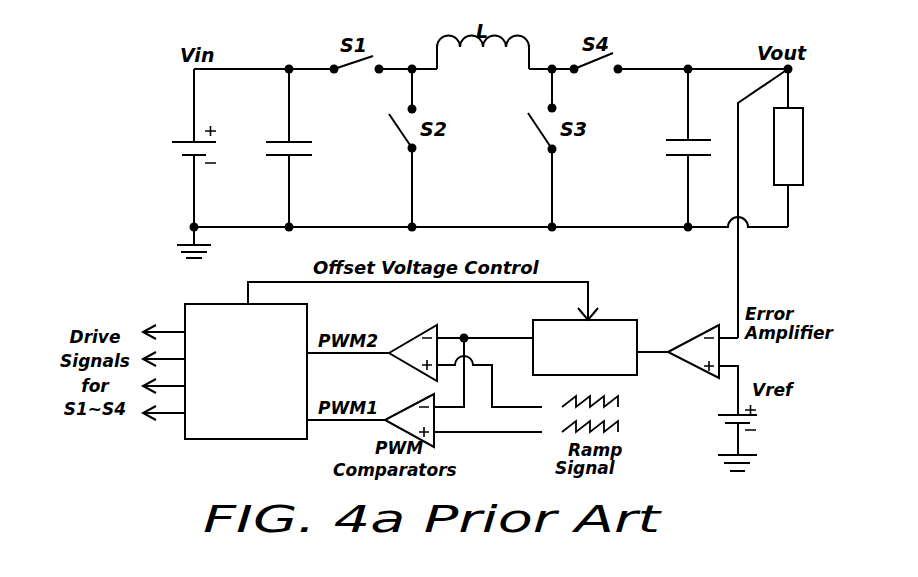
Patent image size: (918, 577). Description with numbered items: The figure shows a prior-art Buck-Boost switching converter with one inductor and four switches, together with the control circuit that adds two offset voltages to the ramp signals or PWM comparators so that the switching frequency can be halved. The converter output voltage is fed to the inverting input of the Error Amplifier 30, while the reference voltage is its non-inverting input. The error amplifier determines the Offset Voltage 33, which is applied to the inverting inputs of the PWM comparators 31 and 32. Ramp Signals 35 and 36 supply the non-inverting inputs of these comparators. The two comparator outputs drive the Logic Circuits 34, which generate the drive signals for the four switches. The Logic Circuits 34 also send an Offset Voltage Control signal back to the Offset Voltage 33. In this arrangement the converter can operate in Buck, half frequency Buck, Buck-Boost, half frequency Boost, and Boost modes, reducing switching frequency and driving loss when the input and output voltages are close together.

The Error Amplifier 30 is at (720, 352).
The PWM comparator 31 is at (405, 412).
The PWM comparator 32 is at (407, 343).
The Offset Voltage 33 is at (618, 323).
The Logic Circuits 34 is at (198, 307).
The Ramp Signal 35 is at (618, 402).
The Ramp Signal 36 is at (618, 427).